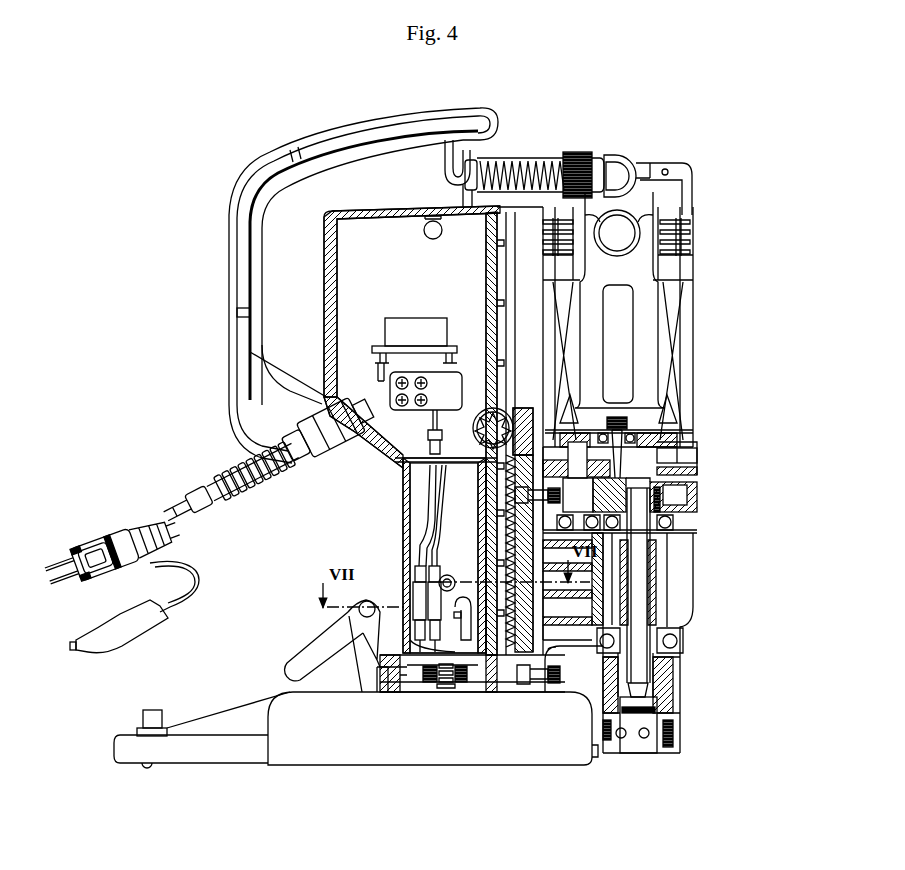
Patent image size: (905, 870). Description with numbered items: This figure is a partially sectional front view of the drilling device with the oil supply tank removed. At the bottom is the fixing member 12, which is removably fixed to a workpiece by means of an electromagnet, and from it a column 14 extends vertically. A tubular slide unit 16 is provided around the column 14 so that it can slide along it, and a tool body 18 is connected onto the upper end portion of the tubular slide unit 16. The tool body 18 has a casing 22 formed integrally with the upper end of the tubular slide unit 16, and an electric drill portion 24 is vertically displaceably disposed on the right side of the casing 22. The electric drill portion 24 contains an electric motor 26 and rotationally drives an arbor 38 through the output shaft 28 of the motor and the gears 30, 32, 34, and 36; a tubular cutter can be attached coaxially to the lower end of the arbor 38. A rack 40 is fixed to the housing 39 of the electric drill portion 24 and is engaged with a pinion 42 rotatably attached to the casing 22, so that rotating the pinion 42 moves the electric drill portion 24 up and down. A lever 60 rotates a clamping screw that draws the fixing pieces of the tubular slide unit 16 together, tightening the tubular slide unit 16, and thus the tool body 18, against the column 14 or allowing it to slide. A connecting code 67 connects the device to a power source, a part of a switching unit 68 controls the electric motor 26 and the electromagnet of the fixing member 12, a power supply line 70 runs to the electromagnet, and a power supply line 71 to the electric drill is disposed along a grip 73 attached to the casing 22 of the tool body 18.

The fixing member 12 is at (322, 745).
The column 14 is at (396, 692).
The tubular slide unit 16 is at (383, 562).
The tool body 18 is at (310, 269).
The casing 22 is at (322, 243).
The electric drill portion 24 is at (673, 160).
The electric motor 26 is at (647, 337).
The output shaft 28 is at (630, 414).
The gear 30 is at (699, 443).
The gear 32 is at (699, 469).
The gear 34 is at (678, 498).
The gear 36 is at (677, 510).
The arbor 38 is at (668, 693).
The housing 39 is at (688, 626).
The rack 40 is at (537, 692).
The pinion 42 is at (520, 405).
The lever 60 is at (300, 647).
The connecting code 67 is at (174, 508).
The switching unit 68 is at (385, 316).
The power supply line 70 is at (412, 537).
The power supply line 71 is at (245, 193).
The grip 73 is at (258, 150).